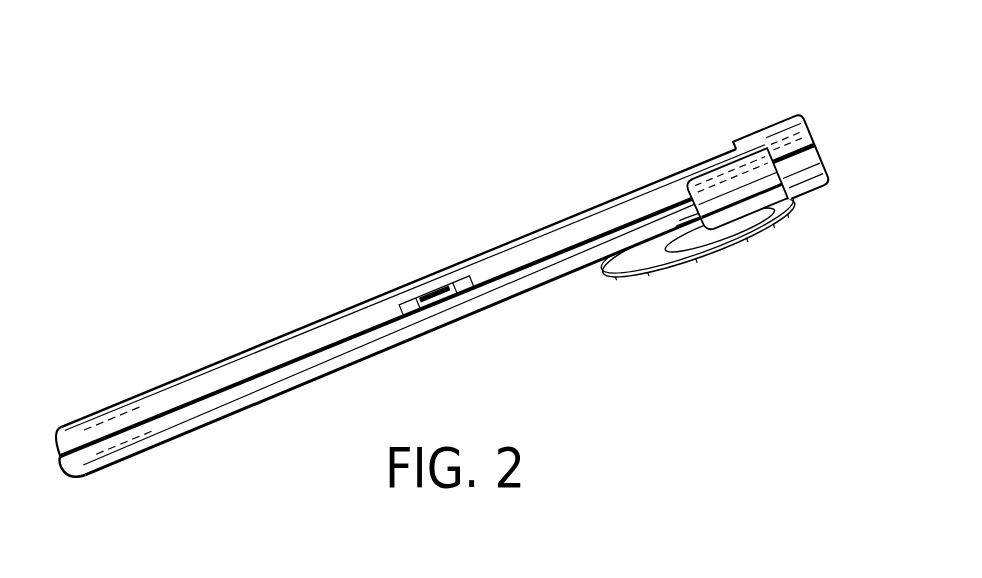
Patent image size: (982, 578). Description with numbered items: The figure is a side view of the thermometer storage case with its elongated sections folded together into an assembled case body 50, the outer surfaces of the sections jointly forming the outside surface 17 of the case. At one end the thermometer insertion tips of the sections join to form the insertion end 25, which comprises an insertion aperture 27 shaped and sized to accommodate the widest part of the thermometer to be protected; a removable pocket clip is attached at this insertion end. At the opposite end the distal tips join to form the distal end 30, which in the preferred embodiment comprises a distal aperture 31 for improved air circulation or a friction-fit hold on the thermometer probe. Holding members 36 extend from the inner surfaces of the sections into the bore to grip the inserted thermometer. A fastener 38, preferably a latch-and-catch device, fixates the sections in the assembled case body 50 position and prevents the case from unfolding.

The assembled case body 50 is at (457, 285).
The outside surface 17 is at (398, 311).
The distal end 30 is at (55, 442).
The distal aperture 31 is at (60, 452).
The holding members 36 is at (103, 414).
The fastener 38 is at (430, 297).
The insertion end 25 is at (807, 121).
The insertion aperture 27 is at (819, 143).